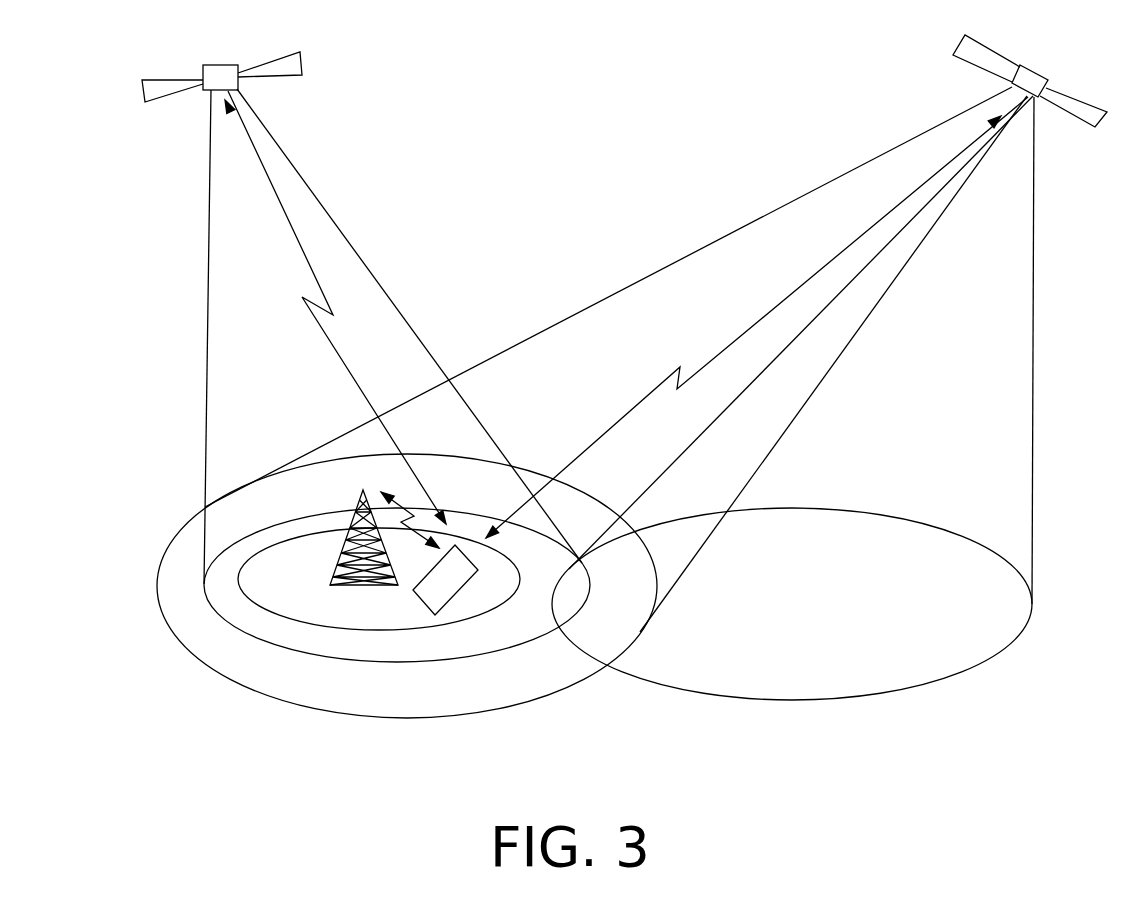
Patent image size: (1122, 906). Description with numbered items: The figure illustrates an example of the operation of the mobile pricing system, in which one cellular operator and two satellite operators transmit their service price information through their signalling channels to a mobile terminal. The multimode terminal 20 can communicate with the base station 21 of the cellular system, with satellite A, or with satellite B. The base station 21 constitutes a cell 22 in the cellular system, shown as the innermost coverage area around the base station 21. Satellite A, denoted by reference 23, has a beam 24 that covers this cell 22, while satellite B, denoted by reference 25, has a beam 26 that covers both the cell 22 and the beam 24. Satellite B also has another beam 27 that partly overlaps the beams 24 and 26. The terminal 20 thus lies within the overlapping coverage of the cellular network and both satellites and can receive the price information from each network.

The multimode terminal 20 is at (457, 593).
The base station 21 is at (356, 500).
The cell 22 is at (347, 629).
The satellite A 23 is at (194, 67).
The beam 24 is at (433, 663).
The satellite B 25 is at (1055, 81).
The beam 26 is at (503, 712).
The beam 27 is at (730, 697).